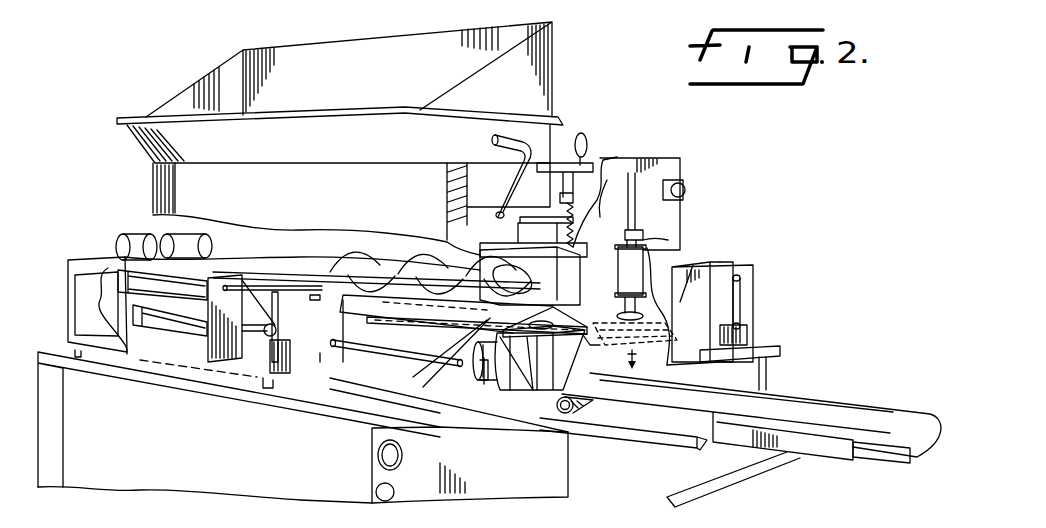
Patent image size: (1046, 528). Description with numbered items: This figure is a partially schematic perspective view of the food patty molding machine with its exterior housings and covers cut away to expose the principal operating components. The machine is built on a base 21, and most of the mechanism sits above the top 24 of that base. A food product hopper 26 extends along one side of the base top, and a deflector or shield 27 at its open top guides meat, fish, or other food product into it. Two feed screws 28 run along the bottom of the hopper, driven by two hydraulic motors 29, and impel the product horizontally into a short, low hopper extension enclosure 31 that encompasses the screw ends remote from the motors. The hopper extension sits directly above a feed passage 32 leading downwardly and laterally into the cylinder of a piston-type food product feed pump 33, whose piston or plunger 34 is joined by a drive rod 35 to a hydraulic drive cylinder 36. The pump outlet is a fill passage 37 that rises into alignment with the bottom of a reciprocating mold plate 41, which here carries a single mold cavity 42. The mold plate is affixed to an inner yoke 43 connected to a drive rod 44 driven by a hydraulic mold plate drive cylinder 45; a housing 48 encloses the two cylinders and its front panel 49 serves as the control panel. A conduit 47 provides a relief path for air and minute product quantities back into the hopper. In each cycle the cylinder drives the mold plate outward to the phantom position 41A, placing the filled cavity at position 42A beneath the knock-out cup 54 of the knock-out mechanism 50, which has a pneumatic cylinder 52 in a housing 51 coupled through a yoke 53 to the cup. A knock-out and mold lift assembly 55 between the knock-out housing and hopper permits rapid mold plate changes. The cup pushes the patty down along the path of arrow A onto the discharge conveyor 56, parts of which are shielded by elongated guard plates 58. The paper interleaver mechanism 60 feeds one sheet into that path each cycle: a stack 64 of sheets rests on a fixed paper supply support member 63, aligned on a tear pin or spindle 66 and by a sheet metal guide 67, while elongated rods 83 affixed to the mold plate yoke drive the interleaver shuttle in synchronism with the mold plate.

The base 21 is at (222, 479).
The top of base 24 is at (177, 386).
The food product hopper 26 is at (152, 181).
The deflector or shield 27 is at (548, 52).
The feed screws 28 is at (272, 243).
The hydraulic motors 29 is at (180, 235).
The hopper extension enclosure 31 is at (575, 261).
The feed passage 32 is at (553, 296).
The food product feed pump 33 is at (507, 378).
The piston or plunger 34 is at (488, 372).
The drive rod 35 is at (333, 348).
The hydraulic drive cylinder 36 is at (160, 323).
The fill passage 37 is at (537, 352).
The mold plate 41 is at (480, 336).
The mold plate knock-out position 41A is at (693, 315).
The mold cavity 42 is at (473, 358).
The mold cavity knock-out position 42A is at (590, 342).
The inner yoke 43 is at (322, 295).
The mold plate drive rod 44 is at (317, 295).
The hydraulic mold plate drive cylinder 45 is at (140, 290).
The conduit 47 is at (494, 141).
The housing 48 is at (69, 282).
The front panel 49 is at (80, 288).
The knock-out mechanism 50 is at (661, 151).
The knock-out housing 51 is at (679, 169).
The pneumatic cylinder 52 is at (637, 172).
The yoke 53 is at (643, 240).
The knock-out cup 54 is at (615, 303).
The knock-out and mold lift assembly 55 is at (565, 158).
The discharge or takeaway conveyor 56 is at (907, 418).
The guard plates 58 is at (768, 378).
The paper interleaver mechanism 60 is at (727, 260).
The paper supply support member 63 is at (779, 346).
The stack of paper sheets 64 is at (748, 333).
The paper alignment tear pin or spindle 66 is at (742, 294).
The sheet metal guide member or shield 67 is at (747, 271).
The elongated rods 83 is at (331, 343).
The arrow A is at (646, 356).